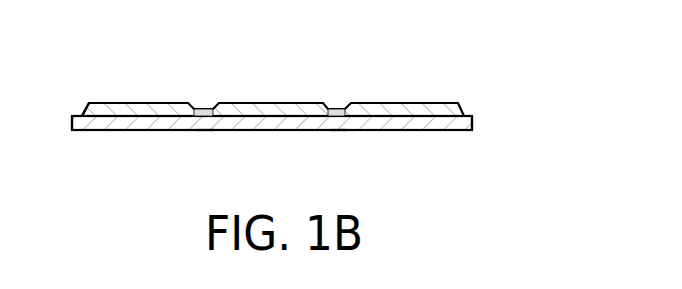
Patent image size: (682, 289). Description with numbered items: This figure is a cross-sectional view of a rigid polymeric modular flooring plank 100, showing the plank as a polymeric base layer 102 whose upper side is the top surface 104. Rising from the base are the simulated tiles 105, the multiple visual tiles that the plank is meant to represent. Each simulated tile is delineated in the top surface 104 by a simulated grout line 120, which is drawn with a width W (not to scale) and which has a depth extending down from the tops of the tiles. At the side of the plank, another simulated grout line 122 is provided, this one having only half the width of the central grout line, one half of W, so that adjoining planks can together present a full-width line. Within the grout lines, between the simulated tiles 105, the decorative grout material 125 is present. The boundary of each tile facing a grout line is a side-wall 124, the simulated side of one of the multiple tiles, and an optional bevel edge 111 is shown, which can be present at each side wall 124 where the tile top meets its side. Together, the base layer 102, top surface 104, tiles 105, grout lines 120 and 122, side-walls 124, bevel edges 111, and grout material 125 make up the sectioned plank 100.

The rigid polymeric modular flooring plank 100 is at (281, 101).
The polymeric base layer 102 is at (68, 120).
The top surface 104 is at (466, 114).
The simulated tiles 105 is at (128, 103).
The bevel edge 111 is at (84, 113).
The simulated grout line 120 is at (205, 110).
The simulated grout line (half-width) 122 is at (74, 115).
The side-wall 124 is at (348, 106).
The decorative grout material 125 is at (205, 109).